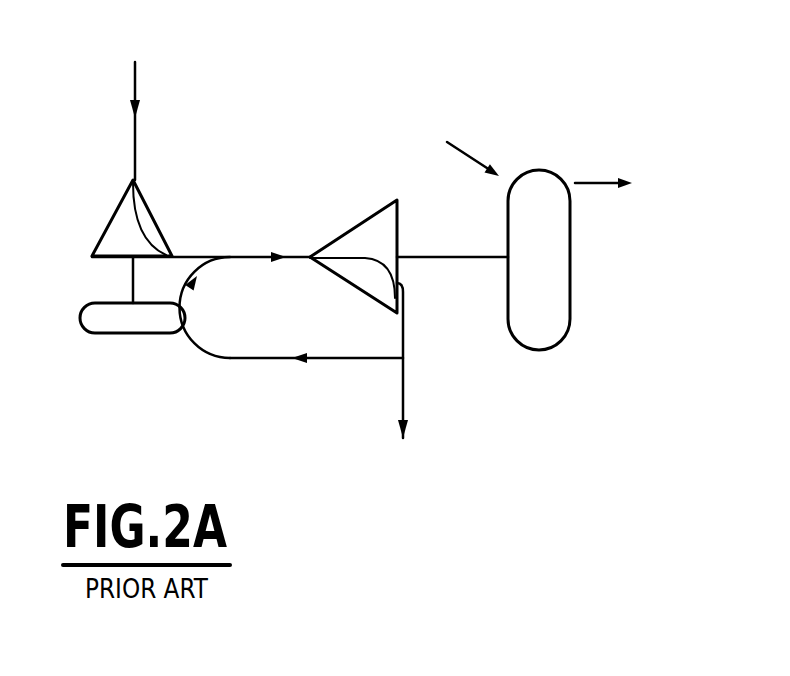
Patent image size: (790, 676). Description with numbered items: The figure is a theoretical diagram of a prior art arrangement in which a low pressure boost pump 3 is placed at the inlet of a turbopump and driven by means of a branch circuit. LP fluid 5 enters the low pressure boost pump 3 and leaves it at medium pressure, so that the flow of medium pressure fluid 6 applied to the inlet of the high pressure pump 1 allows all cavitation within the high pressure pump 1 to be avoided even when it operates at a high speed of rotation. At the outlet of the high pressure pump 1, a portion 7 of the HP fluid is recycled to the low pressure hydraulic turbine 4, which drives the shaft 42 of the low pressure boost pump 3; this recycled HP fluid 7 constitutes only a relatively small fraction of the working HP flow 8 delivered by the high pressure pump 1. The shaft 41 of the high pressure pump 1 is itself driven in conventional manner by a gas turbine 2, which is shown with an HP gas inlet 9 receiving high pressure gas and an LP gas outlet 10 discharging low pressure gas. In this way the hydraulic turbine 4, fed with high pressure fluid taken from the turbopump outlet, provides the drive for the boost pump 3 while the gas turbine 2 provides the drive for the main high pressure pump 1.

The high pressure pump 1 is at (378, 227).
The gas turbine 2 is at (555, 283).
The low pressure boost pump 3 is at (122, 216).
The low pressure hydraulic turbine 4 is at (118, 335).
The LP fluid 5 is at (130, 76).
The medium pressure fluid flow 6 is at (302, 255).
The recycled HP fluid portion 7 is at (322, 357).
The working HP flow 8 is at (405, 400).
The HP gas inlet 9 is at (468, 152).
The LP gas outlet 10 is at (597, 180).
The shaft of the HP pump 41 is at (450, 260).
The shaft of the LP pump 42 is at (130, 270).